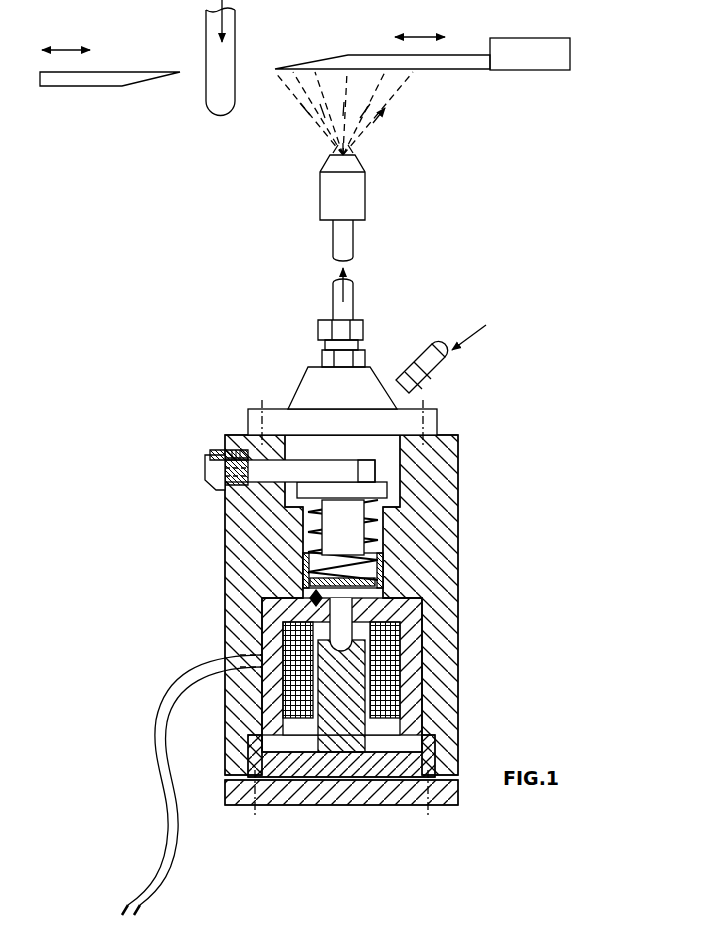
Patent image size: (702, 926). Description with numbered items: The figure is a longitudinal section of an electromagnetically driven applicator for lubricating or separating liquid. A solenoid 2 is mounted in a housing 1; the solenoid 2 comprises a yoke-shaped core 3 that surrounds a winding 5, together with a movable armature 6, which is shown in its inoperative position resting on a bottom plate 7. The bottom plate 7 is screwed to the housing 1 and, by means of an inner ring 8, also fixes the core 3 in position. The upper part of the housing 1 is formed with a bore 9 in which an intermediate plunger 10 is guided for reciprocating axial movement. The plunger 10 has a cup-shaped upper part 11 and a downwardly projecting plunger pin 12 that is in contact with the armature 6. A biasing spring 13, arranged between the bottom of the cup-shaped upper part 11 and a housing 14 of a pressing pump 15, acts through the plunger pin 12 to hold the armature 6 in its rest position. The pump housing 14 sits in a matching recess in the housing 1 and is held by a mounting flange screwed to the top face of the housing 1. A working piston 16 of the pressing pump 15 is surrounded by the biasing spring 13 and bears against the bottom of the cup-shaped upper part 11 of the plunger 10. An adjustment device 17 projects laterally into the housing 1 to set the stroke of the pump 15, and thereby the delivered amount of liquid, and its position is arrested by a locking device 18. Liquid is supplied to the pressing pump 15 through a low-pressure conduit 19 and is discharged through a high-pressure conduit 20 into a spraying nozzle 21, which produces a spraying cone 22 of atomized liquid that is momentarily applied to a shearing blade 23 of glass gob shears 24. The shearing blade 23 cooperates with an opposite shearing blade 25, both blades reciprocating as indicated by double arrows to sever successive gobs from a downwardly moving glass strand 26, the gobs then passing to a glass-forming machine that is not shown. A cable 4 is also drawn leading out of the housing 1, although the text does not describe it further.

The housing 1 is at (456, 590).
The solenoid 2 is at (428, 660).
The yoke-shaped core 3 is at (410, 692).
The cable 4 is at (156, 738).
The winding 5 is at (390, 632).
The movable armature 6 is at (365, 785).
The bottom plate 7 is at (300, 795).
The inner ring 8 is at (436, 748).
The bore 9 is at (390, 535).
The intermediate plunger 10 is at (314, 597).
The cup-shaped upper part 11 is at (386, 572).
The plunger pin 12 is at (330, 603).
The biasing spring 13 is at (322, 525).
The housing of the pressing pump 14 is at (388, 490).
The pressing pump 15 is at (295, 385).
The working piston 16 is at (315, 582).
The adjustment device 17 is at (205, 468).
The locking device 18 is at (236, 450).
The low-pressure conduit 19 is at (436, 385).
The high-pressure conduit 20 is at (353, 245).
The spraying nozzle 21 is at (365, 192).
The spraying cone 22 is at (388, 126).
The shearing blade 23 is at (450, 69).
The glass gob shears 24 is at (520, 31).
The opposite shearing blade 25 is at (72, 86).
The glass strand 26 is at (206, 100).